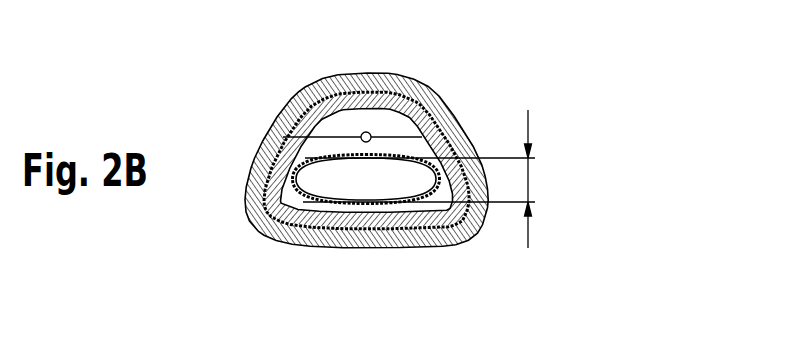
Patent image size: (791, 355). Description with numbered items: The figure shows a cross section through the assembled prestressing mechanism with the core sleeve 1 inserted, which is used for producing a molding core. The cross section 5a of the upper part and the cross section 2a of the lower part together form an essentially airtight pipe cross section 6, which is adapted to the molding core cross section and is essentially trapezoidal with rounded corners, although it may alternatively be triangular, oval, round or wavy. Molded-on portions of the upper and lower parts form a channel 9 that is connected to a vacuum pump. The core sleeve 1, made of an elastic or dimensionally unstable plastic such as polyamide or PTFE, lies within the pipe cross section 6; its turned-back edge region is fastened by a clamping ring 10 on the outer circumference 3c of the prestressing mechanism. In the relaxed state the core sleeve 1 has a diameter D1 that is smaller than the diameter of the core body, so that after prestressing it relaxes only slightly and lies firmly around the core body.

The core sleeve 1 is at (316, 150).
The cross section of the lower part 2a is at (324, 233).
The outer circumference of the prestressing mechanism 3c is at (428, 221).
The cross section of the upper part 5a is at (414, 112).
The pipe cross section 6 is at (441, 115).
The channel 9 is at (366, 132).
The clamping ring 10 is at (254, 229).
The diameter of the core sleeve D1 is at (528, 176).